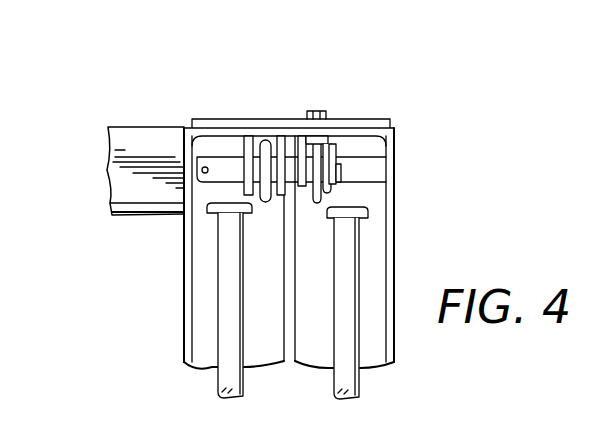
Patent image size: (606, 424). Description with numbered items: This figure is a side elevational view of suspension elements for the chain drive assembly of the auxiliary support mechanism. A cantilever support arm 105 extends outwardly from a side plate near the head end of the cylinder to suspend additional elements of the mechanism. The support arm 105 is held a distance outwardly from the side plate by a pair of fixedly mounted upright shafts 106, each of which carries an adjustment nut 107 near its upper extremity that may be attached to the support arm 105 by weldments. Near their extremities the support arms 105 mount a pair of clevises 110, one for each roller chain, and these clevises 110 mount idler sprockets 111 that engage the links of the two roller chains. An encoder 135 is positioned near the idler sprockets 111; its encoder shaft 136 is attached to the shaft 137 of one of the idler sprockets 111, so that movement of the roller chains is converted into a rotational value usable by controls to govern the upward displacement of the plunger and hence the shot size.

The cantilever support arm 105 is at (188, 126).
The upright shaft 106 is at (228, 292).
The adjustment nut 107 is at (210, 208).
The clevis 110 is at (289, 136).
The idler sprocket 111 is at (265, 140).
The encoder 135 is at (127, 187).
The encoder shaft 136 is at (210, 163).
The shaft 137 is at (253, 136).